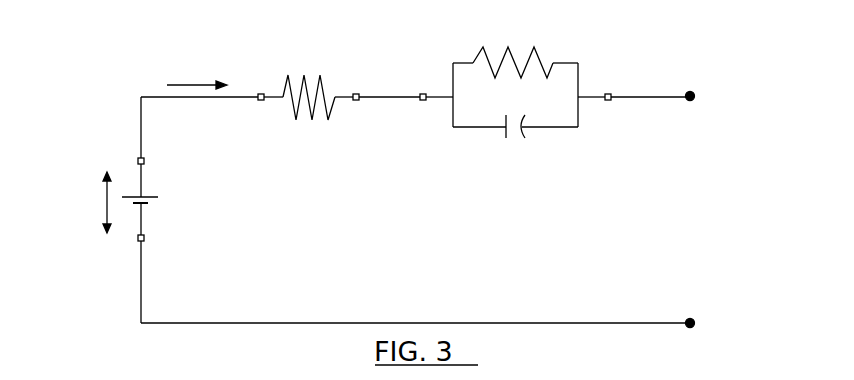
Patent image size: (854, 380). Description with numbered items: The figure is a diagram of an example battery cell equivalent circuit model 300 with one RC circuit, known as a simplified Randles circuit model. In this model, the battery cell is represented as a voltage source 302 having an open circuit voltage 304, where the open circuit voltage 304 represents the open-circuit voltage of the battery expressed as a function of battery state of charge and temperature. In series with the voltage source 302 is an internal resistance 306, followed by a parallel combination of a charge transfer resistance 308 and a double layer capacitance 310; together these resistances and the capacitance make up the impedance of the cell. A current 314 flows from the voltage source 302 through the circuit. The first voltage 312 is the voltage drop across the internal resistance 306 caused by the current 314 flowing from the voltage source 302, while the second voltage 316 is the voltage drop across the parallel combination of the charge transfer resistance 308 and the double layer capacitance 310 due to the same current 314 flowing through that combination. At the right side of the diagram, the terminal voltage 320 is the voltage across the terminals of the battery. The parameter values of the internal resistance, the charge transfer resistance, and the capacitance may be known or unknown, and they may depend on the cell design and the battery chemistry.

The battery cell equivalent circuit model 300 is at (338, 42).
The voltage source 302 is at (152, 195).
The open circuit voltage Voc 304 is at (106, 197).
The internal resistance r1 306 is at (283, 88).
The charge transfer resistance r2 308 is at (543, 62).
The double layer capacitance C 310 is at (503, 130).
The voltage V1 312 is at (313, 155).
The current 314 is at (177, 84).
The voltage V2 316 is at (502, 97).
The terminal voltage Vt 320 is at (698, 201).